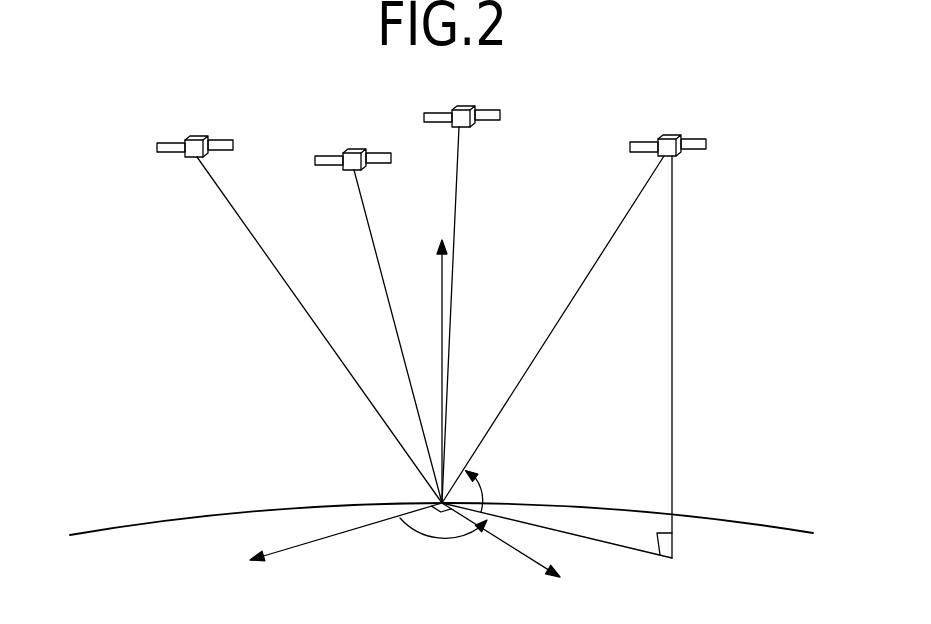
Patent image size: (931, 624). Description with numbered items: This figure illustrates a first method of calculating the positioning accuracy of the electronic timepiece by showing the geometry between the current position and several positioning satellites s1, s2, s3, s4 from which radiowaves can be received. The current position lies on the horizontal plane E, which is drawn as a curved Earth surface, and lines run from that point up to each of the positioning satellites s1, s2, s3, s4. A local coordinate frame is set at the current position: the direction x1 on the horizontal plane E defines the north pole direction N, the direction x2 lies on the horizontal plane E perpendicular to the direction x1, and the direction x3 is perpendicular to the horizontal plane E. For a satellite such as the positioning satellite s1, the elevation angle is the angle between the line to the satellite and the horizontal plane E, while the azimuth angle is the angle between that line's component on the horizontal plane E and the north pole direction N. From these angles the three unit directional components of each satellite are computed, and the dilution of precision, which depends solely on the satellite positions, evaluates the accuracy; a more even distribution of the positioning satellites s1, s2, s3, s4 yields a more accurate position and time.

The positioning satellite s1 is at (673, 137).
The positioning satellite s2 is at (466, 107).
The positioning satellite s3 is at (358, 150).
The positioning satellite s4 is at (205, 137).
The horizontal plane E is at (430, 519).
The direction x1 is at (318, 541).
The direction x2 is at (513, 554).
The direction x3 is at (440, 360).